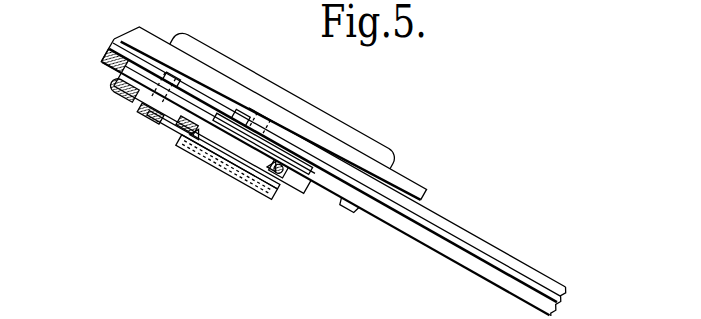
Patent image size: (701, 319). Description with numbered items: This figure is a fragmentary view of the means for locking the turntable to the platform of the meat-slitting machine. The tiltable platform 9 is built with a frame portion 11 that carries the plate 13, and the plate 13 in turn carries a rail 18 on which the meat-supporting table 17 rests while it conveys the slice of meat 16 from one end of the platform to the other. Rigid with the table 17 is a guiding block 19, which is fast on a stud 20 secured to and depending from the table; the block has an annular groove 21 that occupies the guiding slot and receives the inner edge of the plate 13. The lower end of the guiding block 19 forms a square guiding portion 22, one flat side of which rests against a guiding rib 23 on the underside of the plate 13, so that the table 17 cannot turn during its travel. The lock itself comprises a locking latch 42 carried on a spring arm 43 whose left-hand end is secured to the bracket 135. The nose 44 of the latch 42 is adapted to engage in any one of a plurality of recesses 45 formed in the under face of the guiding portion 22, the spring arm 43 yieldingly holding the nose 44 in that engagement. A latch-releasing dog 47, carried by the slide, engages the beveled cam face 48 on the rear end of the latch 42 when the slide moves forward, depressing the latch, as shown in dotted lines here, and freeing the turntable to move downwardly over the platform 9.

The platform 9 is at (556, 279).
The frame portion 11 is at (110, 65).
The plate 13 is at (475, 248).
The slice of meat 16 is at (376, 148).
The meat-supporting table 17 is at (412, 188).
The rail 18 is at (512, 265).
The guiding block 19 is at (238, 120).
The stud 20 is at (285, 130).
The annular groove 21 is at (243, 123).
The square guiding portion 22 is at (303, 181).
The guiding rib 23 is at (338, 198).
The locking latch 42 is at (218, 162).
The spring arm 43 is at (177, 130).
The nose 44 is at (270, 176).
The recess 45 is at (297, 147).
The latch-releasing dog 47 is at (183, 125).
The beveled face 48 is at (200, 137).
The bracket 135 is at (121, 95).